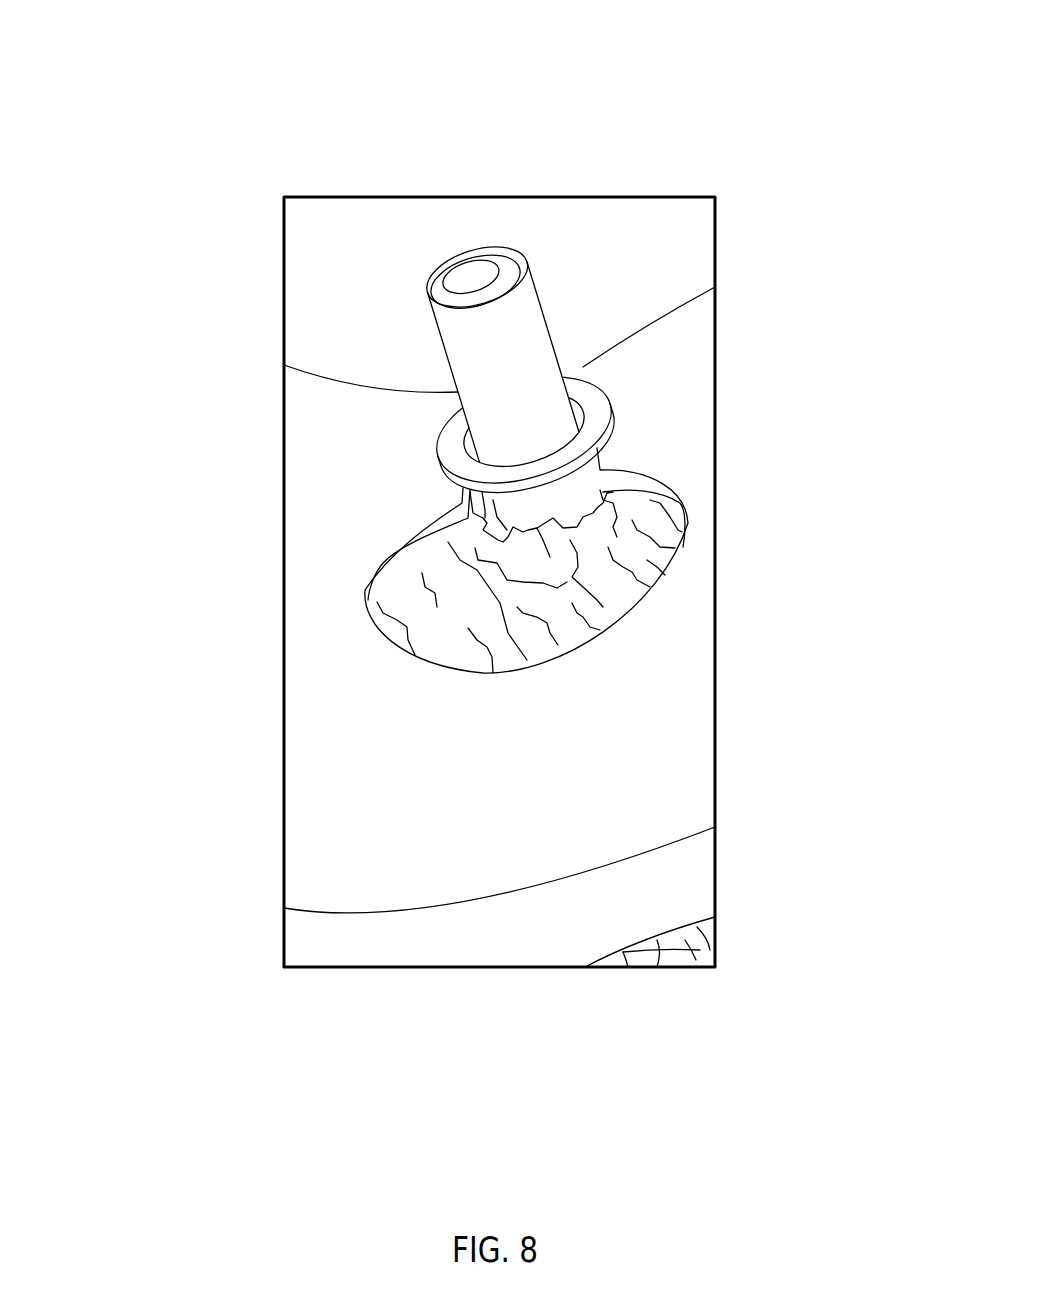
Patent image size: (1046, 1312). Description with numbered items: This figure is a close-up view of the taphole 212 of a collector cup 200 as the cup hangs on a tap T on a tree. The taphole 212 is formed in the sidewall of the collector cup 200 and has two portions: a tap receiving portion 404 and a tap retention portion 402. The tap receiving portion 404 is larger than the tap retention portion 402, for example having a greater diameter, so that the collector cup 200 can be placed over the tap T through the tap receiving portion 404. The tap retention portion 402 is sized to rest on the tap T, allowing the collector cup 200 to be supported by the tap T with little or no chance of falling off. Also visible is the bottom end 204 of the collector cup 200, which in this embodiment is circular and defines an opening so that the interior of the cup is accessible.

The collector cup 200 is at (120, 75).
The tap T is at (533, 410).
The tap retention portion 402 is at (600, 461).
The tap receiving portion 404 is at (610, 593).
The taphole 212 is at (505, 602).
The bottom end 204 is at (573, 938).